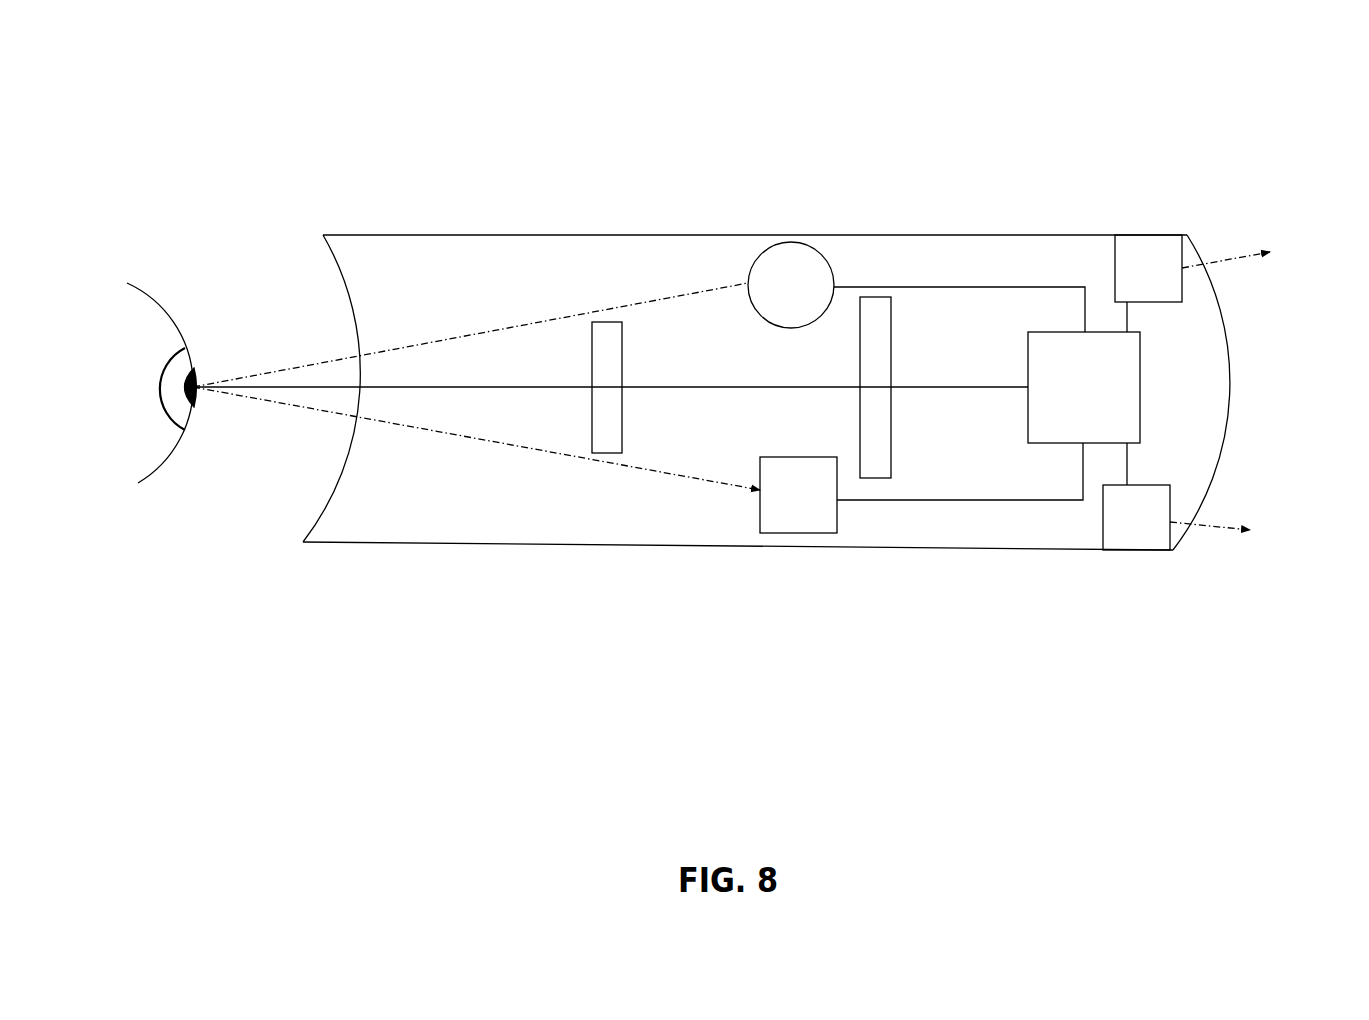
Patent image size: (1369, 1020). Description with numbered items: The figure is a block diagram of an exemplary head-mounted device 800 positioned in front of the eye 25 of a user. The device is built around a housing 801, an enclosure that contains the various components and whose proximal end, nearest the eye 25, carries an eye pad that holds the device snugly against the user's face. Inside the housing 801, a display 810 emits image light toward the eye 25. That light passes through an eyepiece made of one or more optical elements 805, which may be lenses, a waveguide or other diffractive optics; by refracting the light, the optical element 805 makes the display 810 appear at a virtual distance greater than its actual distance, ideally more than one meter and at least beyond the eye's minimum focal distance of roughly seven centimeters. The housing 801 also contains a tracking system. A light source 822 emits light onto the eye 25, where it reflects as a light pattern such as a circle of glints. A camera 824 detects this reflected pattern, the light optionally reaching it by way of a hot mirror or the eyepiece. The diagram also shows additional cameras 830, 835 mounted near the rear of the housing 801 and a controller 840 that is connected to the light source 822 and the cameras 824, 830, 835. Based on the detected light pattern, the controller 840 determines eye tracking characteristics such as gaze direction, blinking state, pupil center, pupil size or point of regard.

The head-mounted device 800 is at (391, 112).
The housing 801 is at (948, 549).
The optical element 805 is at (606, 322).
The display 810 is at (892, 370).
The light source 822 is at (780, 243).
The camera 824 is at (797, 533).
The camera 830 is at (1150, 235).
The camera 835 is at (1137, 550).
The controller 840 is at (1140, 393).
The eye 25 is at (84, 276).